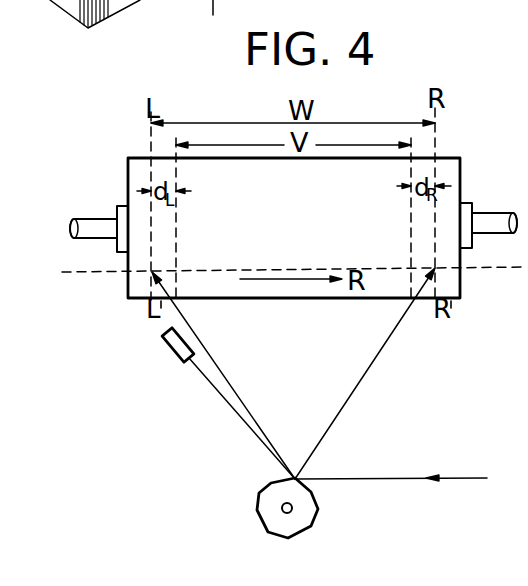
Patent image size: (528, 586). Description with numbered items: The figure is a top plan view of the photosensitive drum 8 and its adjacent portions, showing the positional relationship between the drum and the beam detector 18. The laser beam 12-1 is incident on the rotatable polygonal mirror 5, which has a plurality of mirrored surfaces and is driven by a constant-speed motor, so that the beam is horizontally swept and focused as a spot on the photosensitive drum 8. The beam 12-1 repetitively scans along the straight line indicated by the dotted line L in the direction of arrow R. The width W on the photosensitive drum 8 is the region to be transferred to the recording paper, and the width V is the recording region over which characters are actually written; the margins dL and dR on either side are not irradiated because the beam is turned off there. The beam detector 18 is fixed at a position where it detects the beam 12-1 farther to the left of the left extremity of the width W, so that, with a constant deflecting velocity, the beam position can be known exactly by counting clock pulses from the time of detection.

The photosensitive drum 8 is at (128, 260).
The laser beam 12-1 is at (201, 343).
The beam detector 18 is at (170, 352).
The rotatable polygonal mirror 5 is at (316, 499).